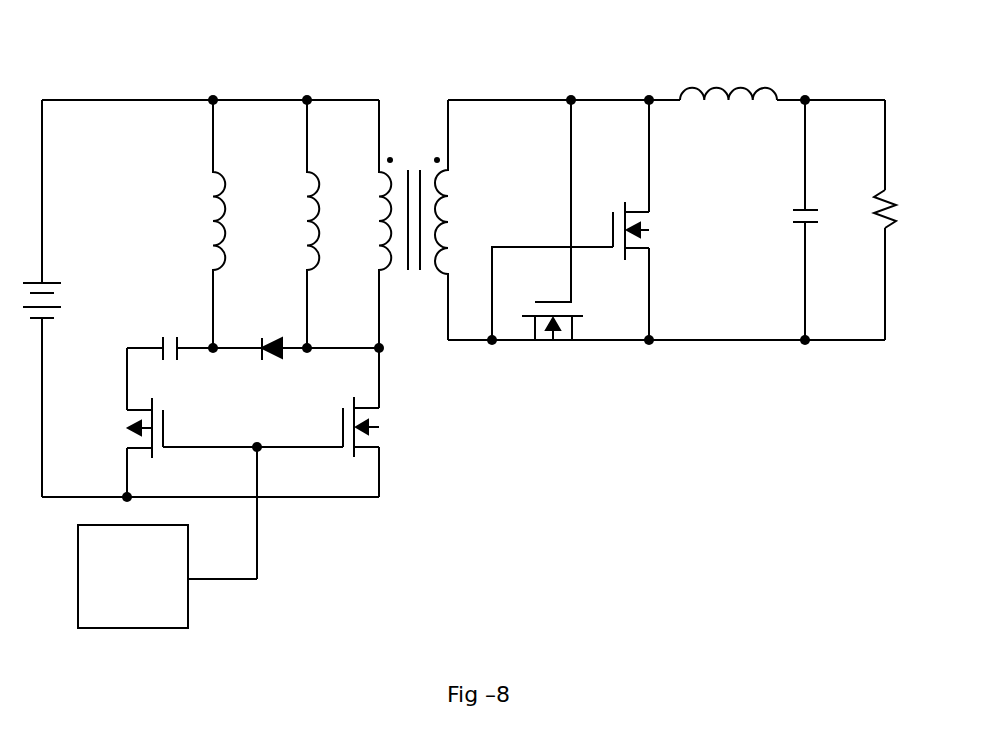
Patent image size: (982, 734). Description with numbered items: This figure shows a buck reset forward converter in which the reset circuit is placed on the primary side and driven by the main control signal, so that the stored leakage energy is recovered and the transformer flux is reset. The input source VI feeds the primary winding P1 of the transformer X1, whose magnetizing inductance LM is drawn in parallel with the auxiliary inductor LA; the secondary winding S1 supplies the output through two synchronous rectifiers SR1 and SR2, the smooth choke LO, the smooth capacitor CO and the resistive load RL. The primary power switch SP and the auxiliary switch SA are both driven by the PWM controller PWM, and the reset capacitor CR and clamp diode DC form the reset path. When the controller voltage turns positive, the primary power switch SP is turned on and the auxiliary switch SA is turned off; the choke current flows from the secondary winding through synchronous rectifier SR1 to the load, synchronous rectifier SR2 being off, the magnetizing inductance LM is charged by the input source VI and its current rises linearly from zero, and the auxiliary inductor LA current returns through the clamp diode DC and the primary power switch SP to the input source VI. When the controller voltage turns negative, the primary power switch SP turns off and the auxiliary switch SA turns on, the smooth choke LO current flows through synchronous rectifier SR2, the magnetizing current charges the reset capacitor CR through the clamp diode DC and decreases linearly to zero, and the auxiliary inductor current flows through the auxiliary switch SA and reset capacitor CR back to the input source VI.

The input source VI is at (60, 297).
The auxiliary inductor LA is at (200, 224).
The magnetizing inductance LM is at (293, 224).
The transformer primary winding P1 is at (366, 224).
The transformer X1 is at (415, 194).
The transformer secondary winding S1 is at (460, 220).
The synchronous rectifier SR1 is at (552, 347).
The synchronous rectifier SR2 is at (619, 213).
The smooth choke LO is at (728, 74).
The smooth capacitor CO is at (787, 220).
The resistive load RL is at (869, 213).
The reset capacitor CR is at (170, 333).
The clamp diode DC is at (262, 330).
The auxiliary switch SA is at (121, 428).
The primary power switch SP is at (384, 427).
The PWM controller PWM is at (169, 576).